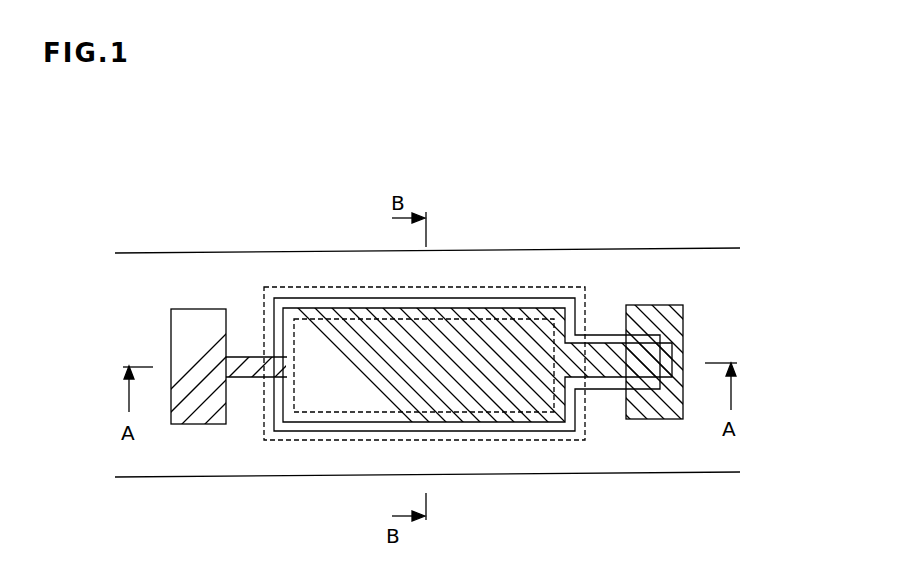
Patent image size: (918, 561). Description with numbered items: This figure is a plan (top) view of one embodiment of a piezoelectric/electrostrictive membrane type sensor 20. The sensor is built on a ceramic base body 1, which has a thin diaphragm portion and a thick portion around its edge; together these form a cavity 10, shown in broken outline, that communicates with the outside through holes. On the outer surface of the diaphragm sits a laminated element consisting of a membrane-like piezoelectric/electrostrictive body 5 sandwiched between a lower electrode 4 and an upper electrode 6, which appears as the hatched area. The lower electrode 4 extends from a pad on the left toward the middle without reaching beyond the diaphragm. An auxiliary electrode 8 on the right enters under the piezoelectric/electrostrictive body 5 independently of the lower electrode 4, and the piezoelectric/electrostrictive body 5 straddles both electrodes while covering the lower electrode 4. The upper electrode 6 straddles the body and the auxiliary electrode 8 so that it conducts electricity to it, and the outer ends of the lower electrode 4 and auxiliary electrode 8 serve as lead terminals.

The ceramic base body 1 is at (708, 457).
The lower electrode 4 is at (197, 315).
The piezoelectric/electrostrictive body 5 is at (455, 303).
The upper electrode 6 is at (487, 325).
The auxiliary electrode 8 is at (658, 306).
The cavity 10 is at (543, 286).
The piezoelectric/electrostrictive membrane type sensor 20 is at (718, 222).